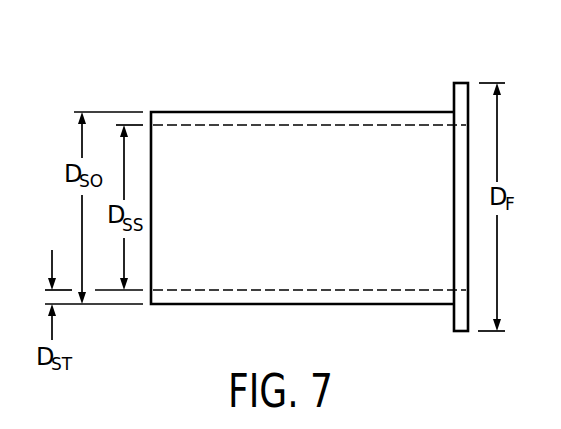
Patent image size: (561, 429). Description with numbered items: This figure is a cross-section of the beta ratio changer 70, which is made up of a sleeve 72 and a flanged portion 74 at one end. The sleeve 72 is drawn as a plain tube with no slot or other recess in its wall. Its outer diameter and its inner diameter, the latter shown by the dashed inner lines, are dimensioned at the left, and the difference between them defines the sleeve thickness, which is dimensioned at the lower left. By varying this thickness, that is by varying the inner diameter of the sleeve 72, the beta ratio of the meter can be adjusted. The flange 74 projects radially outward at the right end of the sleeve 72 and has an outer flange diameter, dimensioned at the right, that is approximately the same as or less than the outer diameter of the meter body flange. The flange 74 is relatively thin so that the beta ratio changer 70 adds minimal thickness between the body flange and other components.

The beta ratio changer 70 is at (196, 68).
The sleeve 72 is at (279, 104).
The flanged portion 74 is at (453, 90).